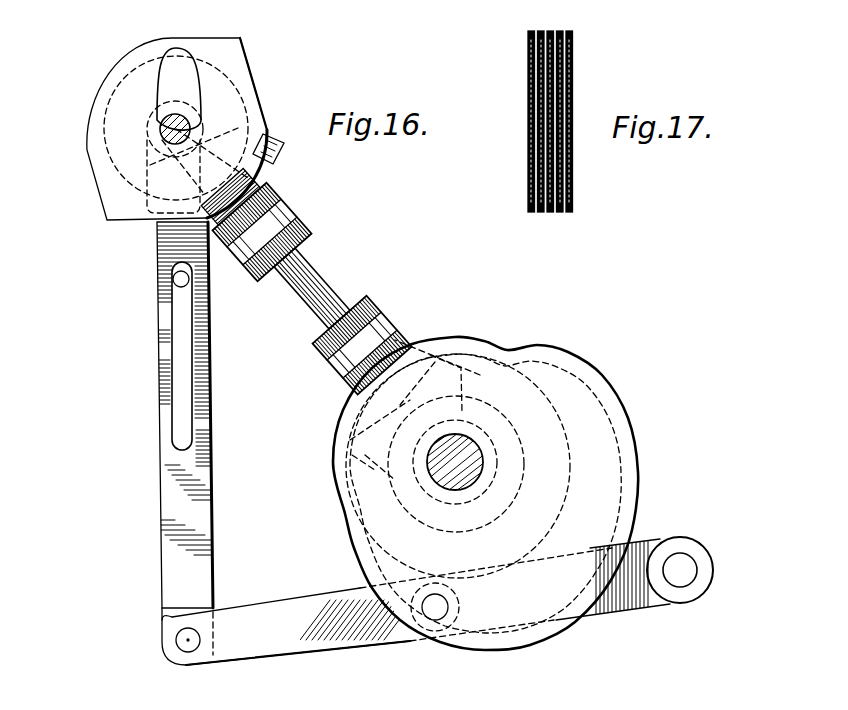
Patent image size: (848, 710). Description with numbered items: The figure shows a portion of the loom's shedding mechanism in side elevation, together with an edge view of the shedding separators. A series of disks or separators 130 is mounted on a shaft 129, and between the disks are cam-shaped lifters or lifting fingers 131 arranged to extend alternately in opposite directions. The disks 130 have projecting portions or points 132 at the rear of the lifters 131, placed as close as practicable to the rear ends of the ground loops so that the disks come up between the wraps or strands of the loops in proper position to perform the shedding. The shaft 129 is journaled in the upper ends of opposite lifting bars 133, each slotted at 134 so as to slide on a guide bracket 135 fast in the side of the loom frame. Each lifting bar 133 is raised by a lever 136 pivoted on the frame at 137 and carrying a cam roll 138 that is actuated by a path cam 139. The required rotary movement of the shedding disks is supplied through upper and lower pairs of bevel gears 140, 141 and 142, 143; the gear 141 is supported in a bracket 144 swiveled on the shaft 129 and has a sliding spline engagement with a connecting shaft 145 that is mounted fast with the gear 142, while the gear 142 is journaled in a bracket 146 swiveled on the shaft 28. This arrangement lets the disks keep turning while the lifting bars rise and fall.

In FIG. 16, the shaft 28 is at (473, 440).
In FIG. 16, the shaft 129 is at (160, 130).
In FIG. 16, the disks or separators 130 is at (257, 112).
In FIG. 17, the disks or separators 130 is at (573, 70).
In FIG. 16, the cam-shaped lifters or lifting fingers 131 is at (163, 80).
In FIG. 17, the cam-shaped lifters or lifting fingers 131 is at (548, 155).
In FIG. 16, the projecting portions or points 132 is at (246, 50).
In FIG. 16, the lifting bars 133 is at (167, 565).
In FIG. 16, the slot 134 is at (178, 393).
In FIG. 16, the guide bracket 135 is at (173, 285).
In FIG. 16, the lever 136 is at (238, 650).
In FIG. 16, the pivot 137 is at (697, 572).
In FIG. 16, the cam roll 138 is at (452, 630).
In FIG. 16, the path cam 139 is at (636, 495).
In FIG. 16, the bevel gear 140 is at (107, 100).
In FIG. 16, the bevel gear 141 is at (283, 154).
In FIG. 16, the bevel gear 142 is at (463, 363).
In FIG. 16, the bevel gear 143 is at (383, 480).
In FIG. 16, the bracket 144 is at (297, 215).
In FIG. 16, the connecting shaft 145 is at (332, 290).
In FIG. 16, the bracket 146 is at (347, 397).